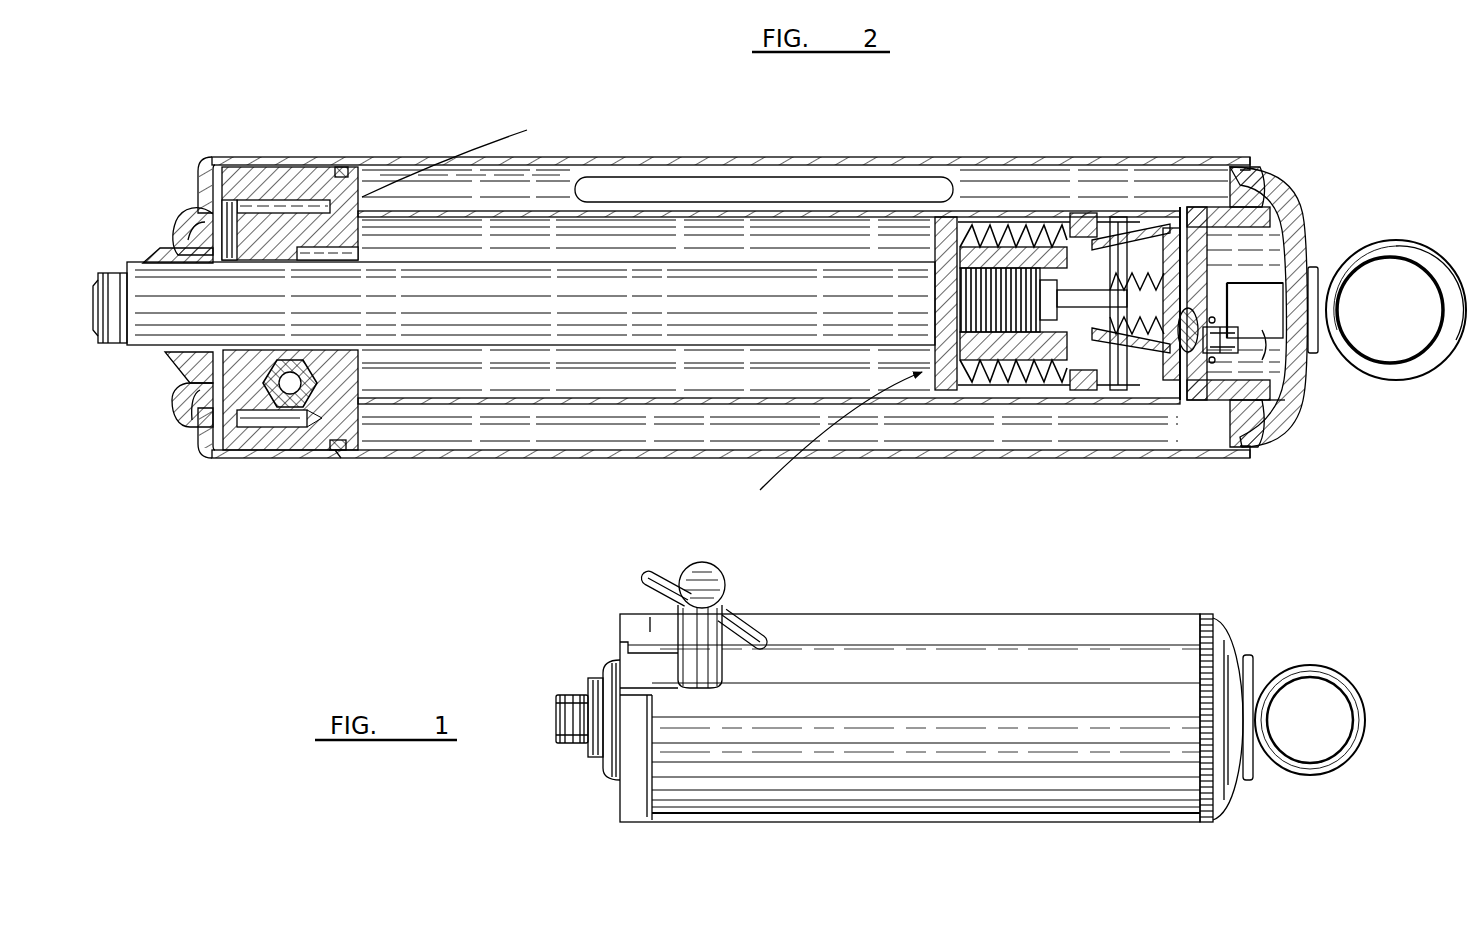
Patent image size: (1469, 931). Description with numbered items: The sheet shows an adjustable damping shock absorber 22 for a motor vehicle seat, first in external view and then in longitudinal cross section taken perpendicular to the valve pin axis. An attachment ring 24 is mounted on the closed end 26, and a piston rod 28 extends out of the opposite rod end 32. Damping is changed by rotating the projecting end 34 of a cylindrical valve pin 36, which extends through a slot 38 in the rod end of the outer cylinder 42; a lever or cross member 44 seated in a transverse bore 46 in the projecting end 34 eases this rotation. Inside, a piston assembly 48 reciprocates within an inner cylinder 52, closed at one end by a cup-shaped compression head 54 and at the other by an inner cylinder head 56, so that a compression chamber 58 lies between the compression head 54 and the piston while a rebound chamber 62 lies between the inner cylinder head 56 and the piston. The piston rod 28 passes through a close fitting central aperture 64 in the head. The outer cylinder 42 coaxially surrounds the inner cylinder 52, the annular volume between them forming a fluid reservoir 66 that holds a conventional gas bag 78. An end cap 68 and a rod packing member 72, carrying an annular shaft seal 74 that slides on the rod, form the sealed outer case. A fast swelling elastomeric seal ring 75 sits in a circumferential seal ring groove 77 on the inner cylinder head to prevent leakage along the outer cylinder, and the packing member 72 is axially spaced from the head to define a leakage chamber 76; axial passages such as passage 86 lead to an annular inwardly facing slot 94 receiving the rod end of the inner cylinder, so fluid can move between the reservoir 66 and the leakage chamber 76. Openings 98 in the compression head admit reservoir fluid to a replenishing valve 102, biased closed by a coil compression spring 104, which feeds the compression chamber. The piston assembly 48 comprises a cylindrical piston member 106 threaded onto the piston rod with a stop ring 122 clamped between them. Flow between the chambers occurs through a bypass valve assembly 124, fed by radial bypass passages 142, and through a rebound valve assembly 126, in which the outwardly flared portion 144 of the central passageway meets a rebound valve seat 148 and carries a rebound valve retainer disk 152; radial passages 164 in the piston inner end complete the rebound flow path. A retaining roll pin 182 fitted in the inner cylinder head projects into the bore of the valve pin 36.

In FIG. 2, the adjustable damping shock absorber 22 is at (474, 150).
In FIG. 1, the adjustable damping shock absorber 22 is at (1010, 608).
In FIG. 1, the attachment ring 24 is at (1322, 670).
In FIG. 2, the closed end 26 is at (1300, 410).
In FIG. 1, the closed end 26 is at (1208, 622).
In FIG. 2, the piston rod 28 is at (108, 344).
In FIG. 1, the piston rod 28 is at (553, 720).
In FIG. 2, the rod end 32 is at (214, 464).
In FIG. 1, the rod end 32 is at (617, 615).
In FIG. 1, the projecting end 34 is at (722, 576).
In FIG. 2, the cylindrical valve pin 36 is at (258, 412).
In FIG. 1, the cylindrical valve pin 36 is at (697, 570).
In FIG. 1, the slot 38 is at (620, 655).
In FIG. 2, the outer cylinder 42 is at (1040, 160).
In FIG. 1, the outer cylinder 42 is at (805, 824).
In FIG. 1, the cross member 44 is at (645, 578).
In FIG. 1, the transverse bore 46 is at (732, 620).
In FIG. 2, the piston assembly 48 is at (831, 445).
In FIG. 2, the inner cylinder 52 is at (480, 404).
In FIG. 2, the compression head 54 is at (1268, 180).
In FIG. 2, the inner cylinder head 56 is at (290, 185).
In FIG. 2, the compression chamber 58 is at (1255, 440).
In FIG. 2, the rebound chamber 62 is at (590, 378).
In FIG. 2, the central aperture 64 is at (190, 392).
In FIG. 2, the fluid reservoir 66 is at (878, 428).
In FIG. 2, the end cap 68 is at (1282, 198).
In FIG. 2, the rod packing member 72 is at (175, 232).
In FIG. 2, the shaft seal 74 is at (160, 262).
In FIG. 2, the seal ring 75 is at (343, 170).
In FIG. 2, the leakage chamber 76 is at (218, 215).
In FIG. 2, the seal ring groove 77 is at (338, 460).
In FIG. 2, the gas bag 78 is at (780, 190).
In FIG. 2, the axial passage 86 is at (265, 195).
In FIG. 2, the slot 94 is at (454, 148).
In FIG. 2, the openings 98 is at (1260, 278).
In FIG. 2, the replenishing valve 102 is at (1235, 325).
In FIG. 2, the coil compression spring 104 is at (1280, 405).
In FIG. 2, the piston member 106 is at (1150, 394).
In FIG. 2, the stop ring 122 is at (950, 394).
In FIG. 2, the bypass valve assembly 124 is at (1105, 225).
In FIG. 2, the rebound valve assembly 126 is at (1172, 392).
In FIG. 2, the radial bypass passages 142 is at (1190, 235).
In FIG. 2, the flared portion 144 is at (1227, 290).
In FIG. 2, the rebound valve seat 148 is at (1062, 372).
In FIG. 2, the rebound valve retainer disk 152 is at (1165, 402).
In FIG. 2, the radial passages 164 is at (1080, 225).
In FIG. 2, the retaining roll pin 182 is at (264, 462).